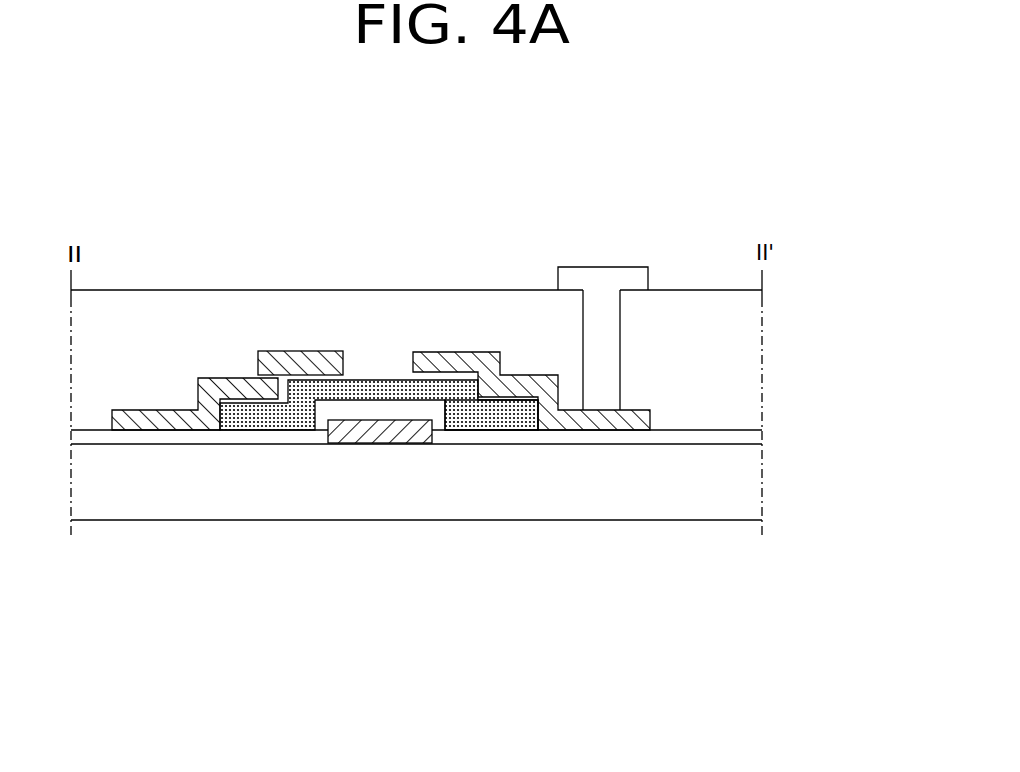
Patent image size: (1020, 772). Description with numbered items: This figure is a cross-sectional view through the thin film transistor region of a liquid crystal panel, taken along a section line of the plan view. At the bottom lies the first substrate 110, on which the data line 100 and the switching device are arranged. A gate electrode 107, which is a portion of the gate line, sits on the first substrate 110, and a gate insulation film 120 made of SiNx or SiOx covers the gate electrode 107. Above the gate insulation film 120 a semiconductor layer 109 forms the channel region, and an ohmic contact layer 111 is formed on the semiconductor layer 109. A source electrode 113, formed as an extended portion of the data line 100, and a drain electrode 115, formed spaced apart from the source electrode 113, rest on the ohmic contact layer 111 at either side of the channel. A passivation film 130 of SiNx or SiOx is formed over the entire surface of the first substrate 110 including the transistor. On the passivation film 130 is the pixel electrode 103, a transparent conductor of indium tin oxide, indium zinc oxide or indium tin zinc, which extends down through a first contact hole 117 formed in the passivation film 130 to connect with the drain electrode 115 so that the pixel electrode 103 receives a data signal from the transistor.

The data line 100 is at (153, 445).
The pixel electrode 103 is at (600, 278).
The gate electrode 107 is at (385, 445).
The semiconductor layer 109 is at (477, 400).
The first substrate 110 is at (755, 485).
The ohmic contact layer 111 is at (516, 400).
The source electrode 113 is at (309, 351).
The drain electrode 115 is at (454, 352).
The first contact hole 117 is at (610, 352).
The gate insulation film 120 is at (755, 436).
The passivation film 130 is at (752, 358).